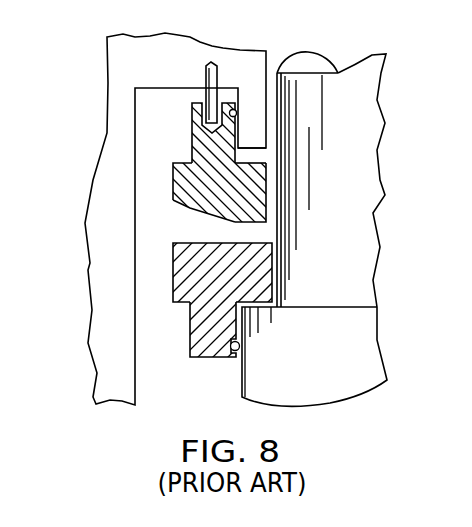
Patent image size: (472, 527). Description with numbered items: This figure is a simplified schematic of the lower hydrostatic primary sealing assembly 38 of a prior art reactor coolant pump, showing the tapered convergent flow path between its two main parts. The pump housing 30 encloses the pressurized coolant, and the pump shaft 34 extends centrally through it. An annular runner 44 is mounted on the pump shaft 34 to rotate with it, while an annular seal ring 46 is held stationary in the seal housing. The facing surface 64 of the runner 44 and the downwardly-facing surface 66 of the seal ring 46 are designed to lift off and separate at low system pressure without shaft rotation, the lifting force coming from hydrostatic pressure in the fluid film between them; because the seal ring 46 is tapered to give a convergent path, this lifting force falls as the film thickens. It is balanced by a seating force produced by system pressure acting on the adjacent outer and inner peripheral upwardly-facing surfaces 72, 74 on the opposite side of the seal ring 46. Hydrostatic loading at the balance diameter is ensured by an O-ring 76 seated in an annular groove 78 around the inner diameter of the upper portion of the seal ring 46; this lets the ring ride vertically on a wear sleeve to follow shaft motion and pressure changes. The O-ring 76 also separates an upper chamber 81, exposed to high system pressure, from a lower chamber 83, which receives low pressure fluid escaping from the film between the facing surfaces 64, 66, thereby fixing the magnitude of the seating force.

The pump housing 30 is at (122, 71).
The pump shaft 34 is at (368, 78).
The lower hydrostatic primary sealing assembly 38 is at (295, 267).
The runner 44 is at (177, 272).
The seal ring 46 is at (172, 173).
The facing surface of the runner 64 is at (190, 230).
The facing surface of the seal ring 66 is at (173, 200).
The outer peripheral upwardly-facing surface 72 is at (195, 102).
The inner peripheral upwardly-facing surface 74 is at (255, 153).
The O-ring 76 is at (237, 113).
The annular groove 78 is at (237, 113).
The upper chamber 81 is at (226, 107).
The lower chamber 83 is at (252, 157).